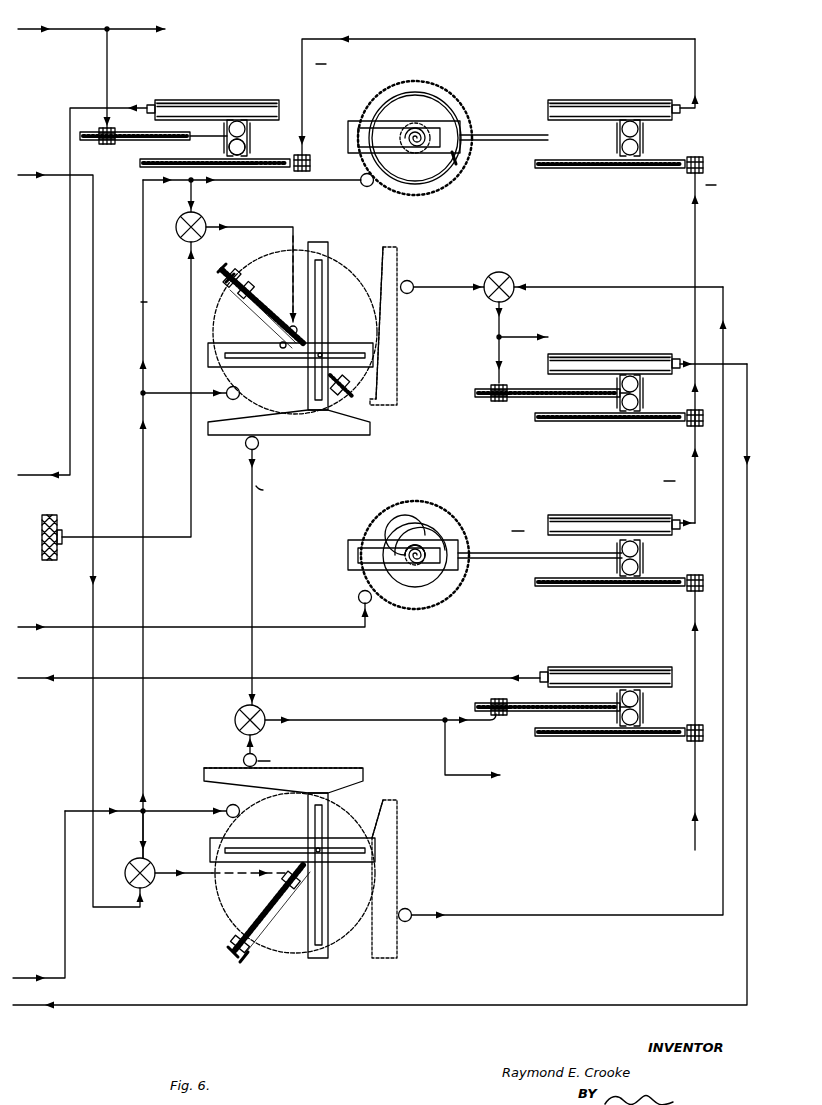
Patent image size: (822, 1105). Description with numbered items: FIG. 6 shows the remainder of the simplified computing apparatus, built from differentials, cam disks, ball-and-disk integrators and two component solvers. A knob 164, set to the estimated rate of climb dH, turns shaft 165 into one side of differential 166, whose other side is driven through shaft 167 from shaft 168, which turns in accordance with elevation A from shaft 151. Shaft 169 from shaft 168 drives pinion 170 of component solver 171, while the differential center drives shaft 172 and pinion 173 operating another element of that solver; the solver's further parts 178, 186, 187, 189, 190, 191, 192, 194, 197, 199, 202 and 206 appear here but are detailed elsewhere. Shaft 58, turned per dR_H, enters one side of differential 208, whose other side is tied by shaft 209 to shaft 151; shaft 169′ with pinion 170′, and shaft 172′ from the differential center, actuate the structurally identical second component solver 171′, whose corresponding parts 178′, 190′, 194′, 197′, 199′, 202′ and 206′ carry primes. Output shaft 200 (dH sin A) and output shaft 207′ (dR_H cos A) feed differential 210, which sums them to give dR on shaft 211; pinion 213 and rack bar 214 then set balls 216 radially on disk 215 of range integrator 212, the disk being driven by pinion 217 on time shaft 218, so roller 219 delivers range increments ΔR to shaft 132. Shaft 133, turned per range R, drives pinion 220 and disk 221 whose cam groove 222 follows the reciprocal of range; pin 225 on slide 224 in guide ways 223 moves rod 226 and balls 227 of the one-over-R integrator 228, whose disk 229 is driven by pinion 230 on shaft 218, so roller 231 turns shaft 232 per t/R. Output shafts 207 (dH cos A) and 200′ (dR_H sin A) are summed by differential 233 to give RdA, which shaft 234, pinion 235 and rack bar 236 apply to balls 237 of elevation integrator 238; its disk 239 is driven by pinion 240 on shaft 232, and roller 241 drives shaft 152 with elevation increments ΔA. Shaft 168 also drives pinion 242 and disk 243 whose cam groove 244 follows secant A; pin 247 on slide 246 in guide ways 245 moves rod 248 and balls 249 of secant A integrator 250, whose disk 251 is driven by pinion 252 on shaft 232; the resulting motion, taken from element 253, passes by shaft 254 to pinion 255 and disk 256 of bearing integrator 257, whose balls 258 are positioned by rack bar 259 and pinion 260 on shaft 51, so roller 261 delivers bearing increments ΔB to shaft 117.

The shaft 51 is at (43, 38).
The shaft 117 is at (88, 109).
The shaft 58 is at (36, 183).
The bearing integrator 257 is at (243, 95).
The roller 261 is at (162, 99).
The balls 258 is at (248, 133).
The disk 256 is at (250, 160).
The pinion 260 is at (110, 145).
The rack bar 259 is at (133, 142).
The pinion 255 is at (310, 162).
The shaft 254 is at (304, 87).
The disk 243 is at (438, 184).
The cam groove 244 is at (437, 82).
The pin 247 is at (432, 130).
The fixed guide ways 245 is at (350, 124).
The rod 248 is at (520, 140).
The slide 246 is at (460, 166).
The pinion 242 is at (366, 196).
The shaft 168 is at (128, 779).
The secant A integrator 250 is at (645, 95).
The integrator cylinder 253 is at (585, 100).
The balls 249 is at (646, 129).
The disk 251 is at (674, 153).
The pinion 252 is at (706, 164).
The shaft 232 is at (698, 214).
The shaft 167 is at (194, 200).
The differential 166 is at (172, 228).
The shaft 165 is at (188, 272).
The knob 164 is at (45, 515).
The shaft 172 is at (256, 222).
The pinion 173 is at (302, 327).
The disc 178 is at (295, 332).
The component solver 171 is at (340, 264).
The cross slide bar 194 is at (322, 352).
The base 197 is at (370, 432).
The guide fin 202 is at (398, 344).
The lead screw 191 is at (264, 292).
The guide rod 187 is at (236, 302).
The pin 186 is at (278, 341).
The screw end 190 is at (226, 258).
The screw bearing 189 is at (212, 282).
The slider block 192 is at (250, 274).
The pinion 170 is at (228, 399).
The shaft 169 is at (178, 394).
The gear 199 is at (236, 449).
The output shaft 200 is at (248, 470).
The gear 206 is at (407, 294).
The output shaft 207 is at (430, 290).
The differential 233 is at (508, 274).
The shaft 234 is at (516, 346).
The elevation integrator 238 is at (652, 348).
The roller 241 is at (614, 354).
The balls 237 is at (644, 389).
The rack bar 236 is at (528, 380).
The pinion 235 is at (492, 402).
The disk 239 is at (652, 412).
The pinion 240 is at (676, 426).
The shaft 152 is at (734, 364).
The output shaft 200′ is at (534, 289).
The rotatable disk 221 is at (436, 601).
The cam groove 222 is at (434, 502).
The pin 225 is at (438, 535).
The slide 224 is at (455, 540).
The fixed guide ways 223 is at (348, 552).
The rod 226 is at (524, 560).
The pinion 220 is at (356, 602).
The shaft 133 is at (36, 630).
The 1/R integrator 228 is at (636, 510).
The roller 231 is at (586, 512).
The balls 227 is at (644, 549).
The disk 229 is at (668, 576).
The pinion 230 is at (682, 596).
The shaft 218 is at (688, 614).
The shaft 132 is at (30, 683).
The range integrator 212 is at (618, 666).
The roller 219 is at (654, 668).
The balls 216 is at (644, 699).
The rack bar 214 is at (532, 702).
The pinion 213 is at (484, 698).
The disk 215 is at (652, 726).
The pinion 217 is at (684, 744).
The shaft 211 is at (478, 718).
The differential 210 is at (232, 710).
The output shaft 207′ is at (256, 750).
The gear 206′ is at (242, 758).
The base 197′ is at (398, 840).
The disc 178′ is at (220, 908).
The second component solver 171′ is at (374, 800).
The cross slide bar 194′ is at (308, 848).
The guide fin 202′ is at (378, 770).
The lead screw 190′ is at (269, 913).
The pinion 170′ is at (228, 806).
The shaft 169′ is at (156, 818).
The shaft 151 is at (67, 967).
The differential 208 is at (124, 872).
The shaft 209 is at (141, 844).
The shaft 172′ is at (194, 880).
The gear 199′ is at (406, 922).